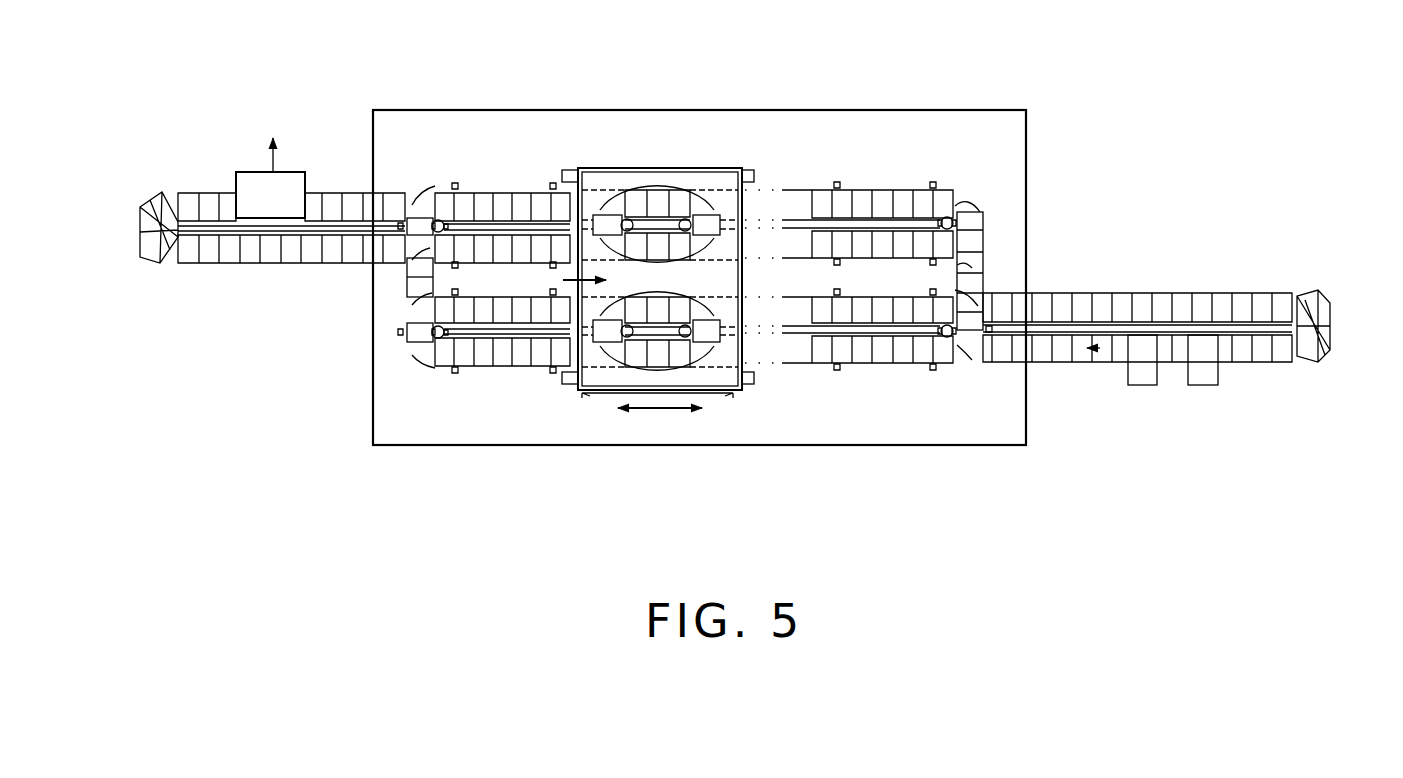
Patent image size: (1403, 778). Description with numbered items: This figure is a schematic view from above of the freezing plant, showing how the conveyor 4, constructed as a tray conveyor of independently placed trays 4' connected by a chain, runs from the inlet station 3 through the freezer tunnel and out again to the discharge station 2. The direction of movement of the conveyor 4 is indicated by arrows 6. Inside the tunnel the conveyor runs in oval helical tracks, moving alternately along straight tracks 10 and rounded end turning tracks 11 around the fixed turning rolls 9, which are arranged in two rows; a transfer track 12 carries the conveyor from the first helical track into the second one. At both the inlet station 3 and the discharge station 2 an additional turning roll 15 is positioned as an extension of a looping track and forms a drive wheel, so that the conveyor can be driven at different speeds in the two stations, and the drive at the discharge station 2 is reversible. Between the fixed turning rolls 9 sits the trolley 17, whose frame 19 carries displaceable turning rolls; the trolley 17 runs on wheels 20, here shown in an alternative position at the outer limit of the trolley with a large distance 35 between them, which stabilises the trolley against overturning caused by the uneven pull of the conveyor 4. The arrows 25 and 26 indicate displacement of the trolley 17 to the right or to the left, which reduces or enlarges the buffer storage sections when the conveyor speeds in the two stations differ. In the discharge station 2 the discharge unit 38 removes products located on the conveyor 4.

The discharge station 2 is at (325, 128).
The inlet station 3 is at (1218, 285).
The conveyor 4 is at (1137, 268).
The trays 4' is at (1137, 283).
The arrows indicating direction of movement 6 is at (143, 205).
The fixed turning rolls 9 is at (412, 205).
The straight tracks 10 is at (885, 185).
The rounded end turning tracks 11 is at (407, 165).
The transfer track 12 is at (983, 250).
The additional turning roll 15 is at (187, 232).
The trolley 17 is at (563, 280).
The frame of the trolley 19 is at (625, 190).
The wheels or rolls 20 is at (747, 170).
The arrow indicating trolley displacement to the right 25 is at (710, 415).
The arrow indicating trolley displacement to the left 26 is at (610, 415).
The distance between the wheels 35 is at (600, 395).
The discharge unit 38 is at (253, 185).